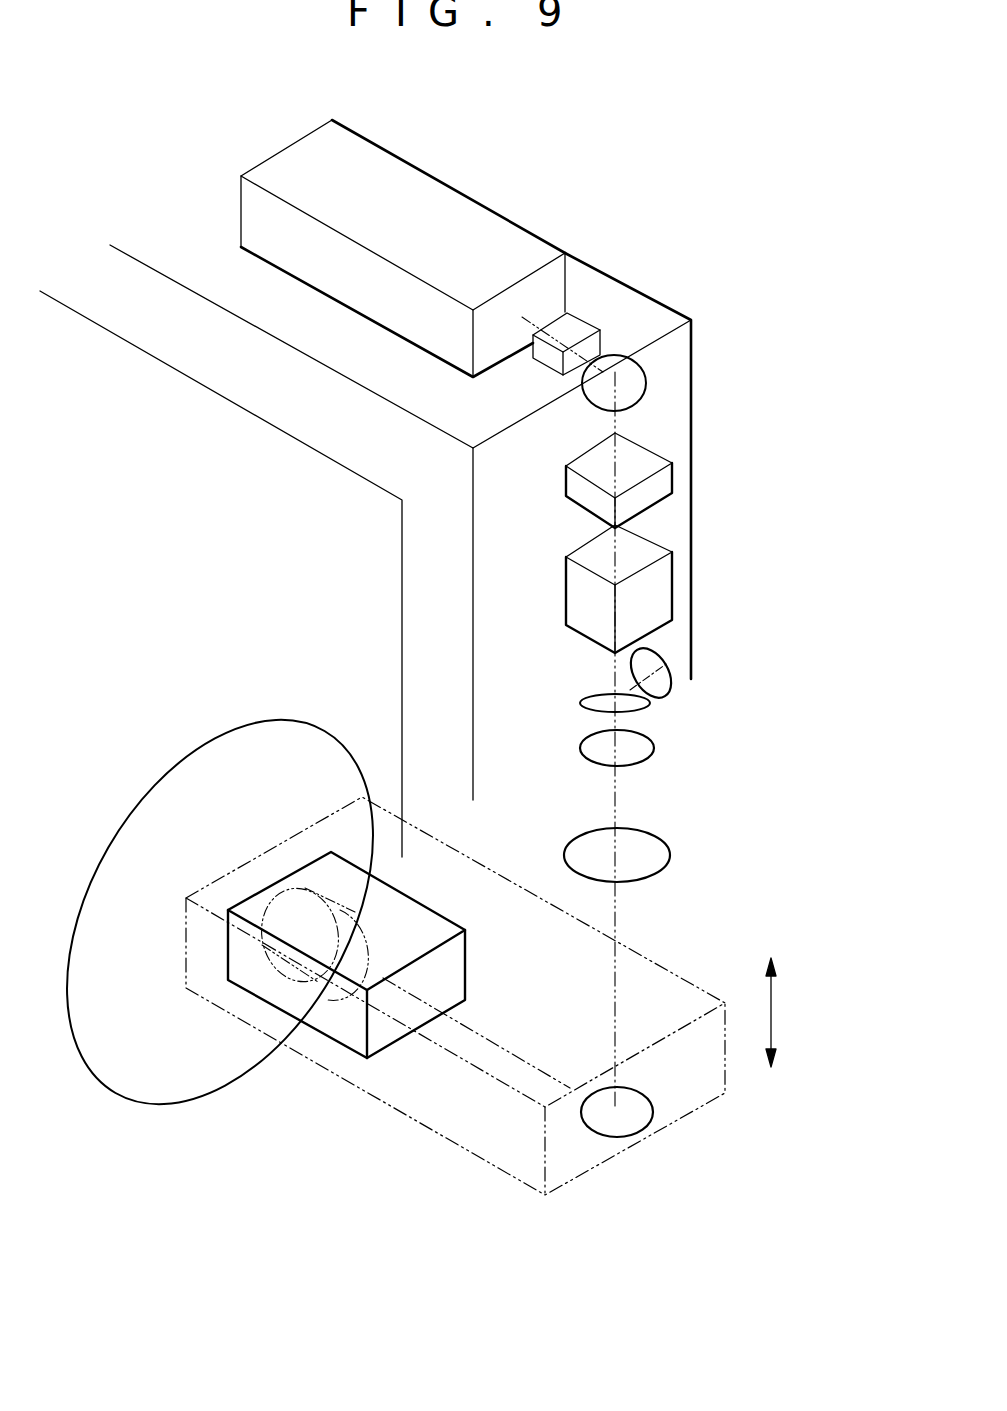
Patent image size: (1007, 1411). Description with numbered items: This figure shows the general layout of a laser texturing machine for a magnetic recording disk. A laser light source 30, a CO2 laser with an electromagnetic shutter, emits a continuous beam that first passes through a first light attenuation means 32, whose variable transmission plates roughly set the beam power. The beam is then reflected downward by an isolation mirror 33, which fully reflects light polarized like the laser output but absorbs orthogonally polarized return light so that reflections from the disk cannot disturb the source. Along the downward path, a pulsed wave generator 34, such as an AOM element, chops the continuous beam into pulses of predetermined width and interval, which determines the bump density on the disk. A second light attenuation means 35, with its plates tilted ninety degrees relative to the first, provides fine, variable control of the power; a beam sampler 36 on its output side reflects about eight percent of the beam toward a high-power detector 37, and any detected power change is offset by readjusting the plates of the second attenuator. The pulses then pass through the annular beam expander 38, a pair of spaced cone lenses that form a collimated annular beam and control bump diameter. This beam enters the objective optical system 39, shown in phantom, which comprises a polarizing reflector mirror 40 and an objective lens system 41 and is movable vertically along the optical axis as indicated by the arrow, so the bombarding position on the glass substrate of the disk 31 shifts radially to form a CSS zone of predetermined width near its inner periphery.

The laser light source 30 is at (445, 193).
The glass substrate of a magnetic recording disk 31 is at (252, 733).
The first light attenuation means 32 is at (572, 346).
The isolation mirror 33 is at (641, 401).
The pulsed wave generator 34 is at (662, 486).
The second light attenuation means 35 is at (662, 595).
The beam sampler 36 is at (583, 697).
The high-power detector 37 is at (651, 672).
The annular beam expander 38 is at (683, 725).
The objective optical system 39 is at (472, 1155).
The polarizing reflector mirror 40 is at (625, 1115).
The objective lens system 41 is at (350, 1028).